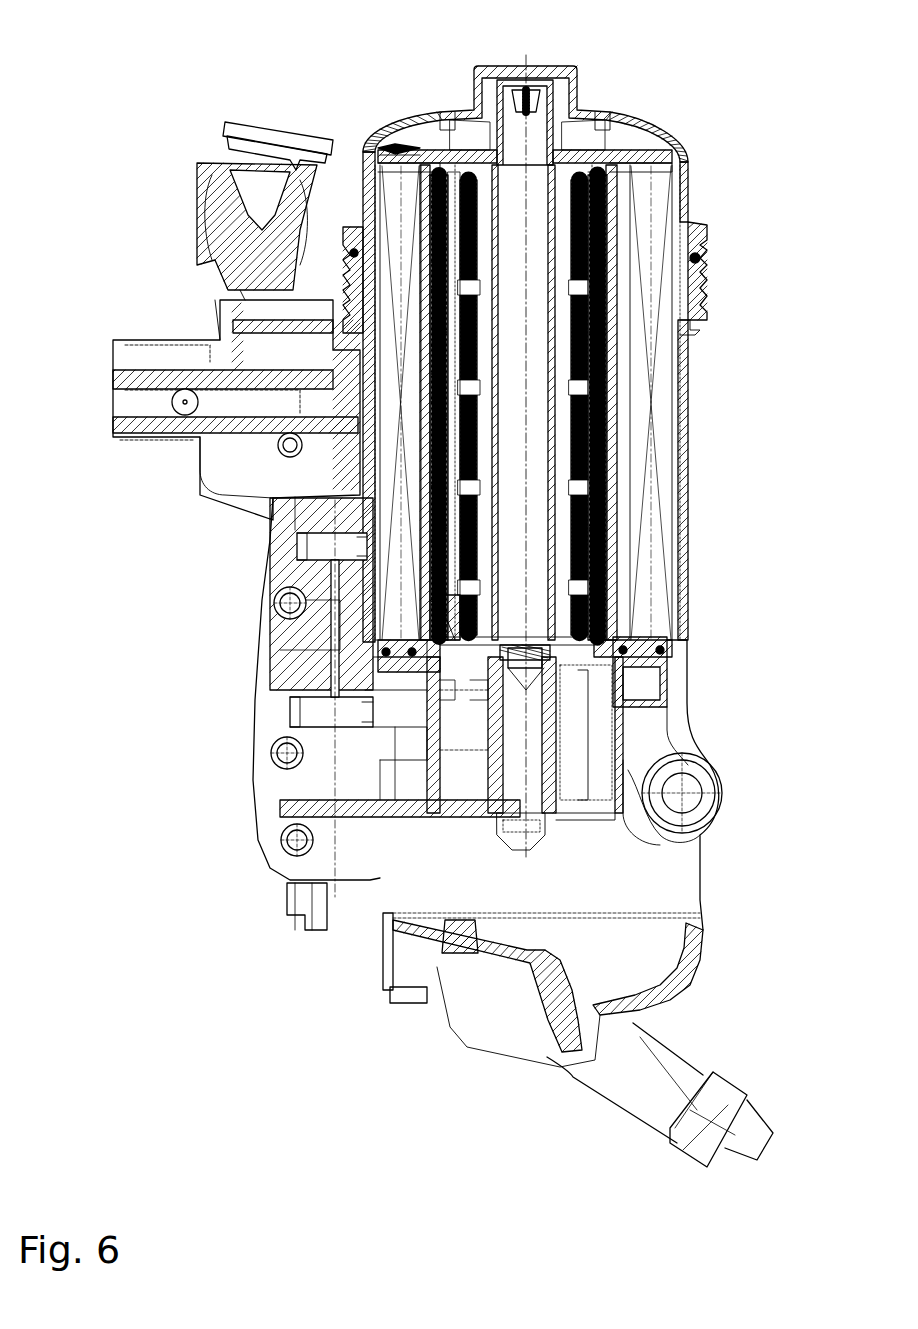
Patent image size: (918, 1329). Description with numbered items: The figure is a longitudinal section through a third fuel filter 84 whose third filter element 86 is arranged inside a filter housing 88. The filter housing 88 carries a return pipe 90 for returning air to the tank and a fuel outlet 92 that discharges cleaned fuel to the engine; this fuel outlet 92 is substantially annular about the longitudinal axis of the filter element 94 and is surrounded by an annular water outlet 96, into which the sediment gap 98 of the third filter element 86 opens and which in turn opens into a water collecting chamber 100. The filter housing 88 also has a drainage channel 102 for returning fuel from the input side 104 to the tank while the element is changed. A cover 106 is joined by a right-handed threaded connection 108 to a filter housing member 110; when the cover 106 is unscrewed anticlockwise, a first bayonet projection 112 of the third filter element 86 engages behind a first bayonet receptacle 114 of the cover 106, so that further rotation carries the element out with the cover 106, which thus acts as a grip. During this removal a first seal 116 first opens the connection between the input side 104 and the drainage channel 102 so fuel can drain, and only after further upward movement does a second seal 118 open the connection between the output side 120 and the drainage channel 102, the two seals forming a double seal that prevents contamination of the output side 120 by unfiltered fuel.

The third fuel filter 84 is at (150, 72).
The third filter element 86 is at (681, 195).
The filter housing 88 is at (722, 400).
The return pipe 90 is at (345, 855).
The fuel outlet 92 is at (478, 718).
The longitudinal axis of the filter element 94 is at (522, 538).
The annular water outlet 96 is at (600, 752).
The sediment gap 98 is at (595, 622).
The water collecting chamber 100 is at (680, 890).
The drainage channel 102 is at (655, 680).
The input side 104 is at (374, 312).
The cover 106 is at (445, 115).
The threaded connection 108 is at (690, 281).
The filter housing member 110 is at (684, 455).
The first bayonet projection 112 is at (403, 150).
The first bayonet receptacle 114 is at (388, 155).
The first seal 116 is at (380, 648).
The second seal 118 is at (412, 690).
The output side 120 is at (448, 610).